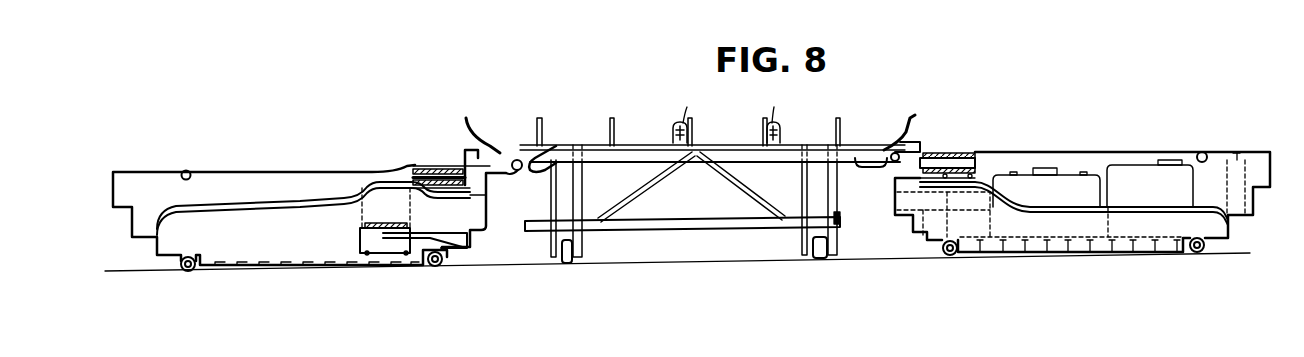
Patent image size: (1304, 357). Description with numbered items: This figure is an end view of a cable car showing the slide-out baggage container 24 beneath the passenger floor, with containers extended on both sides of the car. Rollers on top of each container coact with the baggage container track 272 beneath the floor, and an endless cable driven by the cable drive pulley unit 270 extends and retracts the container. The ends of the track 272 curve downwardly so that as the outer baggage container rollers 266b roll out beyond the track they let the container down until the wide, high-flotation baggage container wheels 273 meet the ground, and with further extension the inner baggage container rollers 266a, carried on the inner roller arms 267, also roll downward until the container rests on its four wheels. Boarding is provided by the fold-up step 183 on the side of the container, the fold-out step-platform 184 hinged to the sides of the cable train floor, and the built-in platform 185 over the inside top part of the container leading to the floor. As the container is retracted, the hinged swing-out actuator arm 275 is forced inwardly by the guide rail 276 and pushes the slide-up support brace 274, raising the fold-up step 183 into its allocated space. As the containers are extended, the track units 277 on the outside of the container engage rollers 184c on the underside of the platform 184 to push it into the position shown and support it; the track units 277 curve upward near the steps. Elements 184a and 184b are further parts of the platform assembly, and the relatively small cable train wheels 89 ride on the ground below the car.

The slide-out baggage container 24 is at (292, 237).
The cable train wheels 89 is at (582, 255).
The fold-up step 183 is at (377, 218).
The fold-out step-platform 184 is at (418, 168).
The coupler post 184a is at (500, 132).
The coupler lever 184b is at (470, 130).
The rollers 184c is at (482, 197).
The built-in platform 185 is at (463, 168).
The inner baggage container rollers 266a is at (542, 146).
The outer baggage container rollers 266b is at (187, 170).
The baggage compartment inner roller arms 267 is at (510, 173).
The cable drive pulley unit 270 is at (908, 142).
The baggage container track 272 is at (752, 162).
The baggage container wheels 273 is at (188, 271).
The passenger step slide-up support brace 274 is at (358, 241).
The swing-out actuator arm 275 is at (426, 233).
The guide rail 276 is at (673, 236).
The track units 277 is at (307, 200).